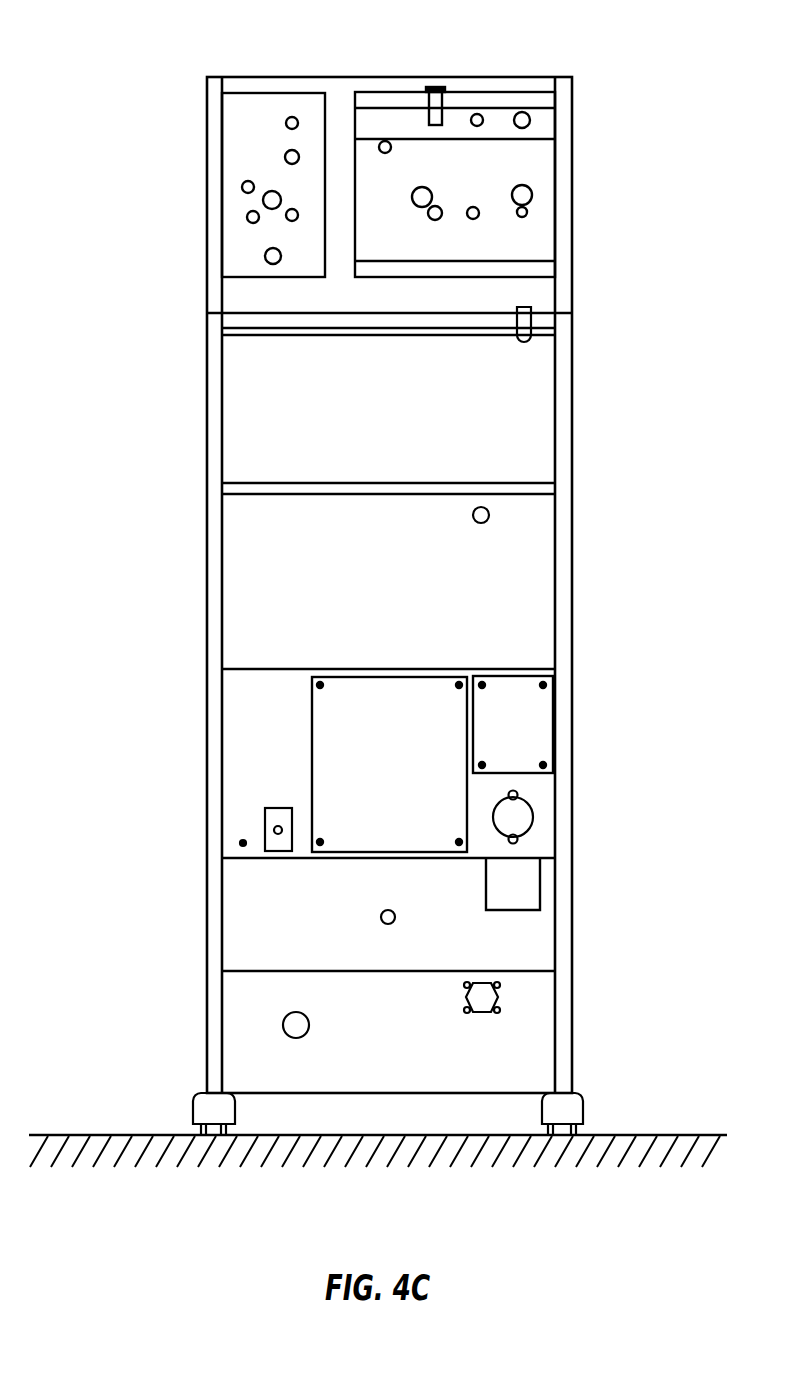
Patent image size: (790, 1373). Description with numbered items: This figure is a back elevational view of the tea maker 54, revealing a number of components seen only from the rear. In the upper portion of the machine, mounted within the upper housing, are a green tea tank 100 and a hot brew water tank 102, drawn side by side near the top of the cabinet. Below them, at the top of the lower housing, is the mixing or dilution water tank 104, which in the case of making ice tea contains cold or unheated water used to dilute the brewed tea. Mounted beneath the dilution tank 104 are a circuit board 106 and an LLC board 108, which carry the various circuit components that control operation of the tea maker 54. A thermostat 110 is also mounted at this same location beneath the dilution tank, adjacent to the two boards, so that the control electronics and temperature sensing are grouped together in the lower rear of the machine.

The tea maker 54 is at (613, 40).
The green tea tank 100 is at (247, 142).
The hot brew water tank 102 is at (522, 175).
The mixing or dilution water tank 104 is at (522, 405).
The circuit board 106 is at (340, 715).
The LLC board 108 is at (522, 725).
The thermostat 110 is at (522, 885).